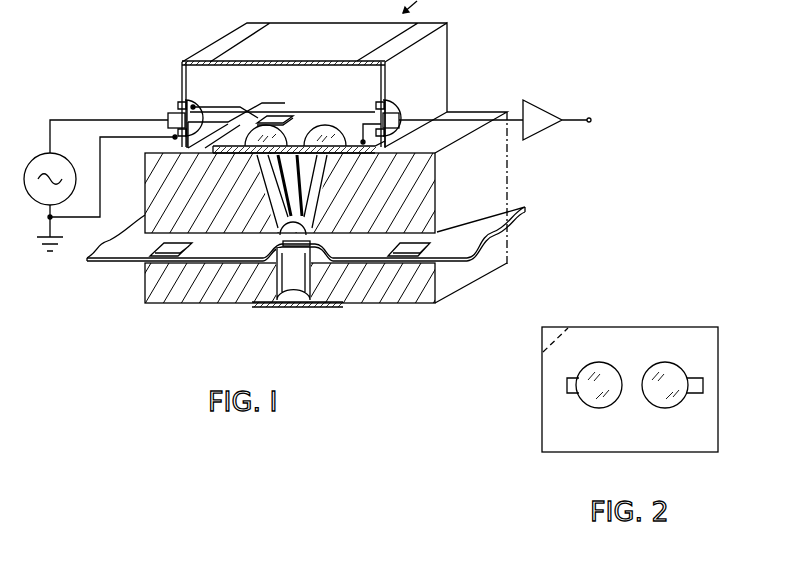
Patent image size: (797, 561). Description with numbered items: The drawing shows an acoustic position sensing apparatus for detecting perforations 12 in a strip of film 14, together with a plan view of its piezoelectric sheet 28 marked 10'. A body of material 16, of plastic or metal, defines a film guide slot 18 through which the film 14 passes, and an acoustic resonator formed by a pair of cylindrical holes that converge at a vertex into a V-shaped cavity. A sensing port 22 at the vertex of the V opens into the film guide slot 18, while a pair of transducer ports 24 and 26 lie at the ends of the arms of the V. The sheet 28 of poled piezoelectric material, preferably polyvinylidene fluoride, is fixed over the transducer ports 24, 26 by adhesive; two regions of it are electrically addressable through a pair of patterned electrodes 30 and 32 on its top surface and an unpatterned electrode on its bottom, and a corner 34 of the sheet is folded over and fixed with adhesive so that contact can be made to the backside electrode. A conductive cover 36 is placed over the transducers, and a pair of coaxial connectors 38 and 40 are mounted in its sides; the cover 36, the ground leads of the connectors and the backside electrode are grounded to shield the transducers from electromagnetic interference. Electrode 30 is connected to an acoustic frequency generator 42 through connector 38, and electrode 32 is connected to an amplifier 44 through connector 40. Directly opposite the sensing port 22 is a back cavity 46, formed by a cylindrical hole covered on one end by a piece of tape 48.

In FIG. 2, the substrate assembly 10' is at (471, 550).
In FIG. 1, the perforations 12 is at (163, 255).
In FIG. 1, the strip of film 14 is at (100, 258).
In FIG. 1, the body of material 16 is at (498, 163).
In FIG. 1, the film guide slot 18 is at (488, 206).
In FIG. 1, the sensing port 22 is at (322, 218).
In FIG. 1, the transducer port 24 is at (262, 177).
In FIG. 1, the transducer port 26 is at (330, 172).
In FIG. 1, the sheet of poled piezoelectric material 28 is at (286, 128).
In FIG. 2, the sheet of poled piezoelectric material 28 is at (632, 337).
In FIG. 1, the patterned electrode 30 is at (287, 108).
In FIG. 2, the patterned electrode 30 is at (580, 395).
In FIG. 1, the patterned electrode 32 is at (325, 132).
In FIG. 2, the patterned electrode 32 is at (680, 395).
In FIG. 1, the corner of the sheet 34 is at (270, 62).
In FIG. 2, the corner of the sheet 34 is at (555, 326).
In FIG. 1, the conductive cover 36 is at (393, 30).
In FIG. 1, the coaxial connector 38 is at (177, 101).
In FIG. 1, the coaxial connector 40 is at (405, 105).
In FIG. 1, the acoustic frequency generator 42 is at (40, 157).
In FIG. 1, the amplifier 44 is at (541, 106).
In FIG. 1, the back cavity 46 is at (286, 305).
In FIG. 1, the piece of tape 48 is at (318, 308).